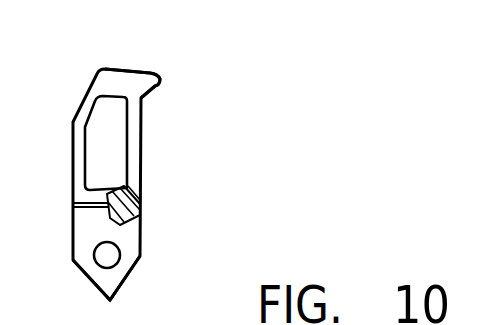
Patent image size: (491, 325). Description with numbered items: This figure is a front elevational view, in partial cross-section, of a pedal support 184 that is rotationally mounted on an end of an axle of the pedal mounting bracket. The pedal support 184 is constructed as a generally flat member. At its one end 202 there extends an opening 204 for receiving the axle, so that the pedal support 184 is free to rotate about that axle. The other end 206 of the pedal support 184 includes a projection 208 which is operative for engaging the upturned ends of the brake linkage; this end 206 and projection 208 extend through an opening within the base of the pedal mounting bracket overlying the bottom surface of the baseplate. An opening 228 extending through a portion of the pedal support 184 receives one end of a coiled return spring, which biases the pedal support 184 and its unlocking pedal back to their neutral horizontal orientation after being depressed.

The pedal support 184 is at (95, 270).
The other end 206 is at (128, 70).
The projection 208 is at (156, 79).
The opening 228 is at (140, 213).
The opening 204 is at (113, 250).
The one end 202 is at (123, 280).